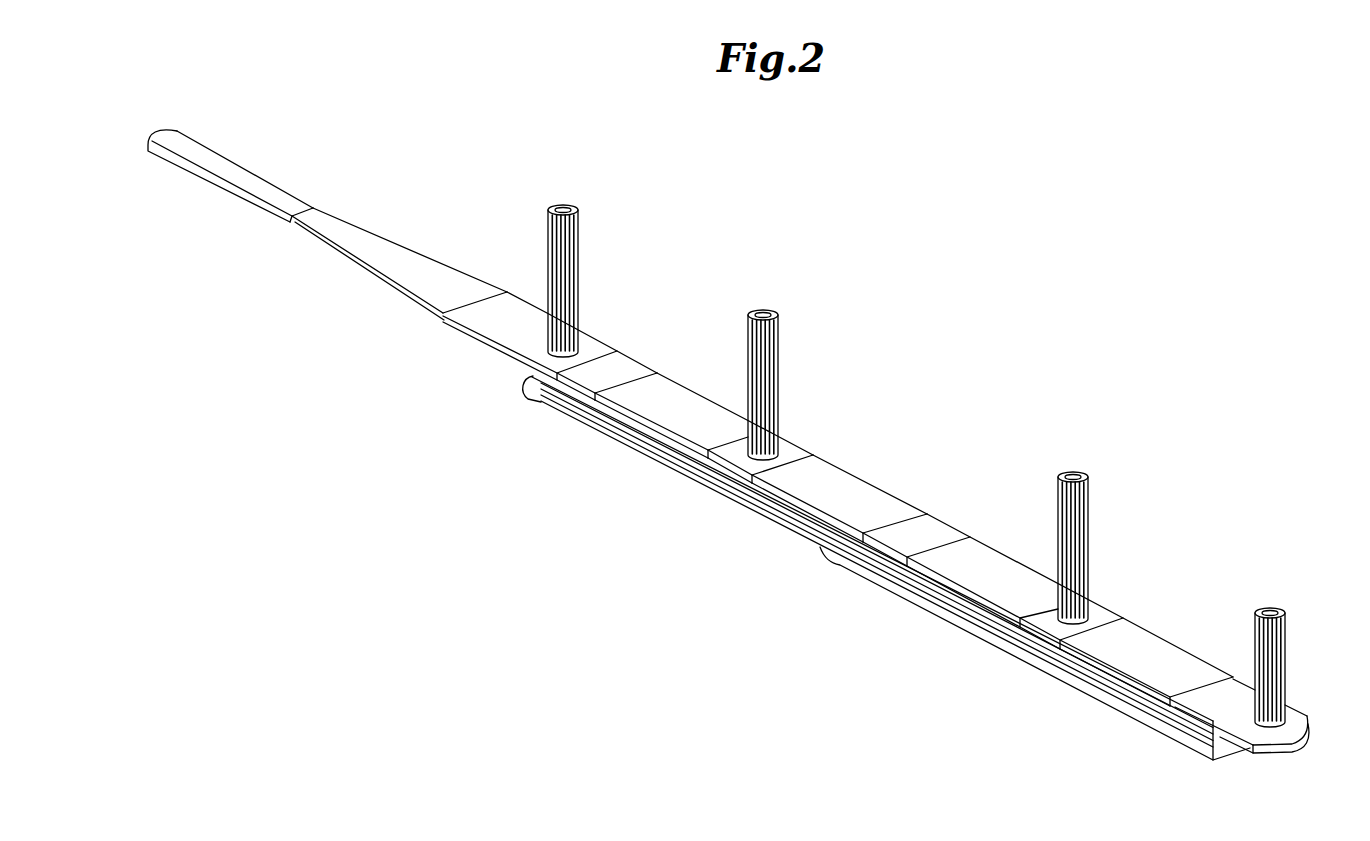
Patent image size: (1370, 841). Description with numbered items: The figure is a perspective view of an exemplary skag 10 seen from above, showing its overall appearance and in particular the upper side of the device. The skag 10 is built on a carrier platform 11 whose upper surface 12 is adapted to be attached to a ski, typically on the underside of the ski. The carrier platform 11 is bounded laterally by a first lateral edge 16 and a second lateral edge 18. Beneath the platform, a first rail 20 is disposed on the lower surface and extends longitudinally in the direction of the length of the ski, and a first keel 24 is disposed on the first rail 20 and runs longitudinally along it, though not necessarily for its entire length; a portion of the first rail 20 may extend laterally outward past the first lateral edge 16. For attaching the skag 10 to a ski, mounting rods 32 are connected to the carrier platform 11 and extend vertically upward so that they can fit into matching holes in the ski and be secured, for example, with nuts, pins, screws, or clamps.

The skag 10 is at (942, 254).
The carrier platform 11 is at (449, 264).
The upper surface 12 is at (678, 413).
The first lateral edge 16 is at (647, 433).
The second lateral edge 18 is at (860, 479).
The first rail 20 is at (777, 513).
The first keel 24 is at (915, 606).
The mounting rods 32 is at (573, 208).